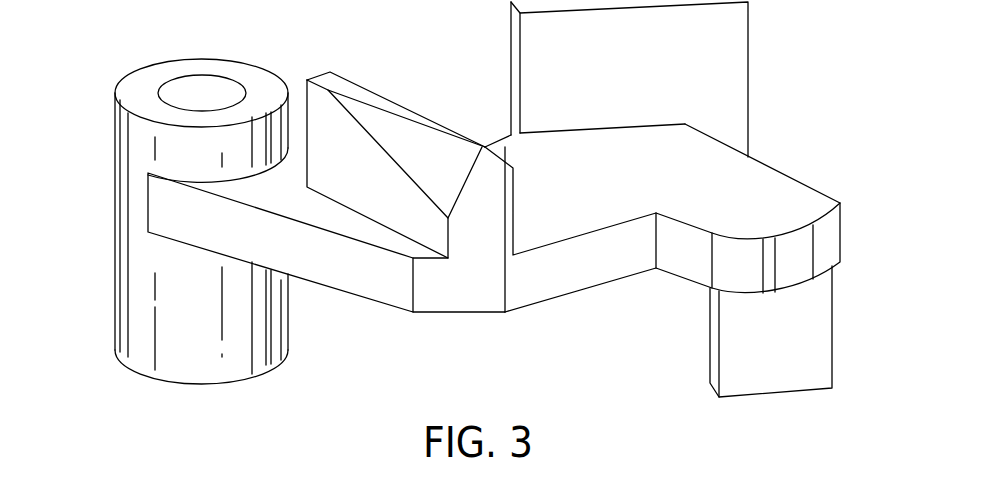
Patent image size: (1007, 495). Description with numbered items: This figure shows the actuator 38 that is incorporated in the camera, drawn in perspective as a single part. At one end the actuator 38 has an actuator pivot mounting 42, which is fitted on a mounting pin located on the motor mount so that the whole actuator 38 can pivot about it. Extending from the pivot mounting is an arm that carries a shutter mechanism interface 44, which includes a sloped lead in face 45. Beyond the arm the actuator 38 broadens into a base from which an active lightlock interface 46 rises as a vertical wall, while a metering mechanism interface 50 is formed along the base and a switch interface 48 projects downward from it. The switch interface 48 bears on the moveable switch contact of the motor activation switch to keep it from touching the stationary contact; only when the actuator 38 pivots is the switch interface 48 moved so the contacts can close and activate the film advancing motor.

The actuator 38 is at (405, 318).
The actuator pivot mounting 42 is at (130, 295).
The shutter mechanism interface 44 is at (333, 130).
The lead in face 45 is at (430, 140).
The active lightlock interface 46 is at (732, 87).
The switch interface 48 is at (813, 333).
The metering mechanism interface 50 is at (683, 262).